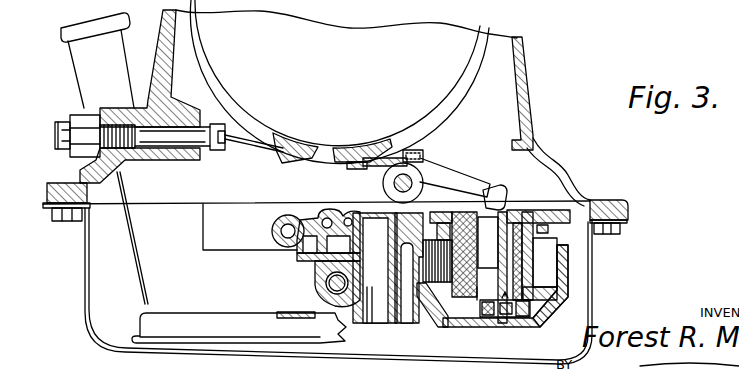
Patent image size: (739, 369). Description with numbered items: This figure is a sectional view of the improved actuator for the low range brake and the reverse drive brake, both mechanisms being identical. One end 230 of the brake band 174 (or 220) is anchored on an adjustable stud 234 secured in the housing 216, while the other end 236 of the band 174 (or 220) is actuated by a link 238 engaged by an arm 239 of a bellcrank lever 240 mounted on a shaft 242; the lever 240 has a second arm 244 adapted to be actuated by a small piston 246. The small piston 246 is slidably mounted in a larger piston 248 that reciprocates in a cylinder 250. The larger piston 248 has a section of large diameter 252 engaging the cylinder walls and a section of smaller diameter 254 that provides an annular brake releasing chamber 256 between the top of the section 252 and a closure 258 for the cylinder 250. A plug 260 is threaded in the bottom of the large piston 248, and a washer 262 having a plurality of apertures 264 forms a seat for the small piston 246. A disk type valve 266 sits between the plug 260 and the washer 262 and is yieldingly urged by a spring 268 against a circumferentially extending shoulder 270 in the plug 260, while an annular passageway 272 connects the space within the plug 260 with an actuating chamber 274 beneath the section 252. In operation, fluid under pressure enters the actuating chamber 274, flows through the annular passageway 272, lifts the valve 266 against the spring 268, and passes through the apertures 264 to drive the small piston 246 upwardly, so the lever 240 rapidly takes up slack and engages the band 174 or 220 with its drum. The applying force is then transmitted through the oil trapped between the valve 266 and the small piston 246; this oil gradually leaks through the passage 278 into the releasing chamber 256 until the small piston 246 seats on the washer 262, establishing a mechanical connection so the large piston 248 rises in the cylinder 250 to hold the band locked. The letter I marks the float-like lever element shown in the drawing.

The brake band 174 is at (222, 47).
The brake band 220 is at (335, 256).
The housing 216 is at (162, 154).
The adjustable stud 234 is at (209, 150).
The end of brake band 230 is at (300, 143).
The other end of brake band 236 is at (352, 148).
The link 238 is at (378, 166).
The arm of bellcrank lever 239 is at (412, 155).
The bellcrank lever 240 is at (440, 167).
The shaft 242 is at (397, 187).
The arm of bellcrank lever 244 is at (494, 192).
The small piston 246 is at (512, 214).
The larger piston 248 is at (409, 268).
The cylinder 250 is at (553, 272).
The section of large diameter 252 is at (562, 291).
The section of smaller diameter 254 is at (470, 211).
The annular brake releasing chamber 256 is at (566, 281).
The closure 258 is at (580, 213).
The plug 260 is at (538, 318).
The washer 262 is at (444, 314).
The apertures 264 is at (505, 296).
The disk type valve 266 is at (496, 299).
The spring 268 is at (526, 324).
The shoulder 270 is at (477, 300).
The annular passageway 272 is at (505, 296).
The actuating chamber 274 is at (553, 317).
The passage 278 is at (525, 257).
The float lever I is at (318, 287).